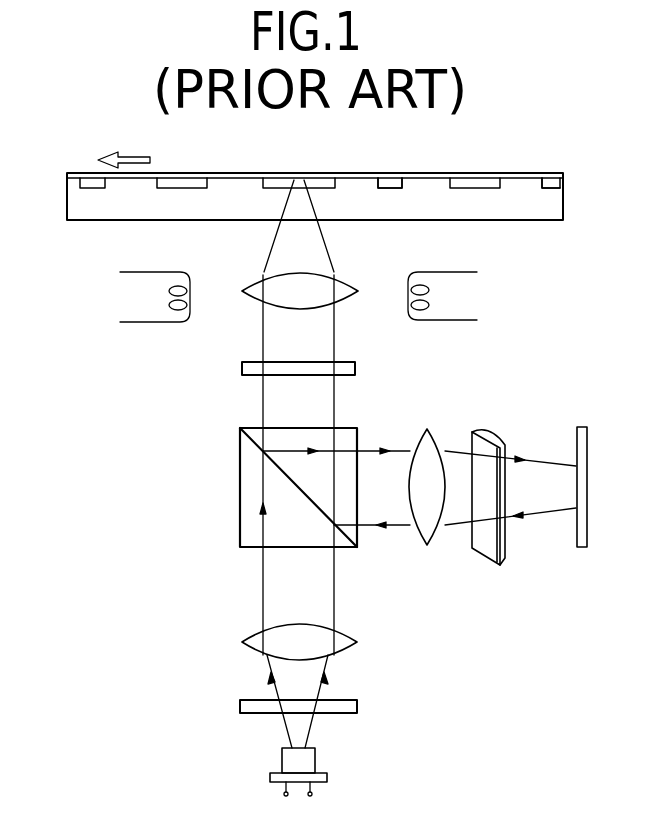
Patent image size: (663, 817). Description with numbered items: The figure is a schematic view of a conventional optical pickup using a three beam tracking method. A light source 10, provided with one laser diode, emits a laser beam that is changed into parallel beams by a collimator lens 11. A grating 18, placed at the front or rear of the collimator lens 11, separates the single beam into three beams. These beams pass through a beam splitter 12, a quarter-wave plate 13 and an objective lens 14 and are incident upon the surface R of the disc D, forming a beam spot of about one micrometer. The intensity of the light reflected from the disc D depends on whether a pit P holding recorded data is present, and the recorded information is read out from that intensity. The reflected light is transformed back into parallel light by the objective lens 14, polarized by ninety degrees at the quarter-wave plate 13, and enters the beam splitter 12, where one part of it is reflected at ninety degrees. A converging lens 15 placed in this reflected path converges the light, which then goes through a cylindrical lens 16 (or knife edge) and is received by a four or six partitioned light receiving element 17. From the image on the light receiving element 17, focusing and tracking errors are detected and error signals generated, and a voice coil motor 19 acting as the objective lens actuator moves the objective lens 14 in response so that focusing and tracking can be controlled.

The light source 10 is at (322, 782).
The collimator lens 11 is at (355, 645).
The beam splitter 12 is at (240, 548).
The λ/4 plate 13 is at (355, 368).
The objective lens 14 is at (356, 283).
The converging lens 15 is at (425, 545).
The cylindrical lens 16 is at (500, 563).
The light receiving element 17 is at (582, 547).
The grating 18 is at (240, 701).
The voice coil motor 19 is at (162, 322).
The disc D is at (487, 173).
The pit P is at (395, 186).
The surface R is at (520, 180).